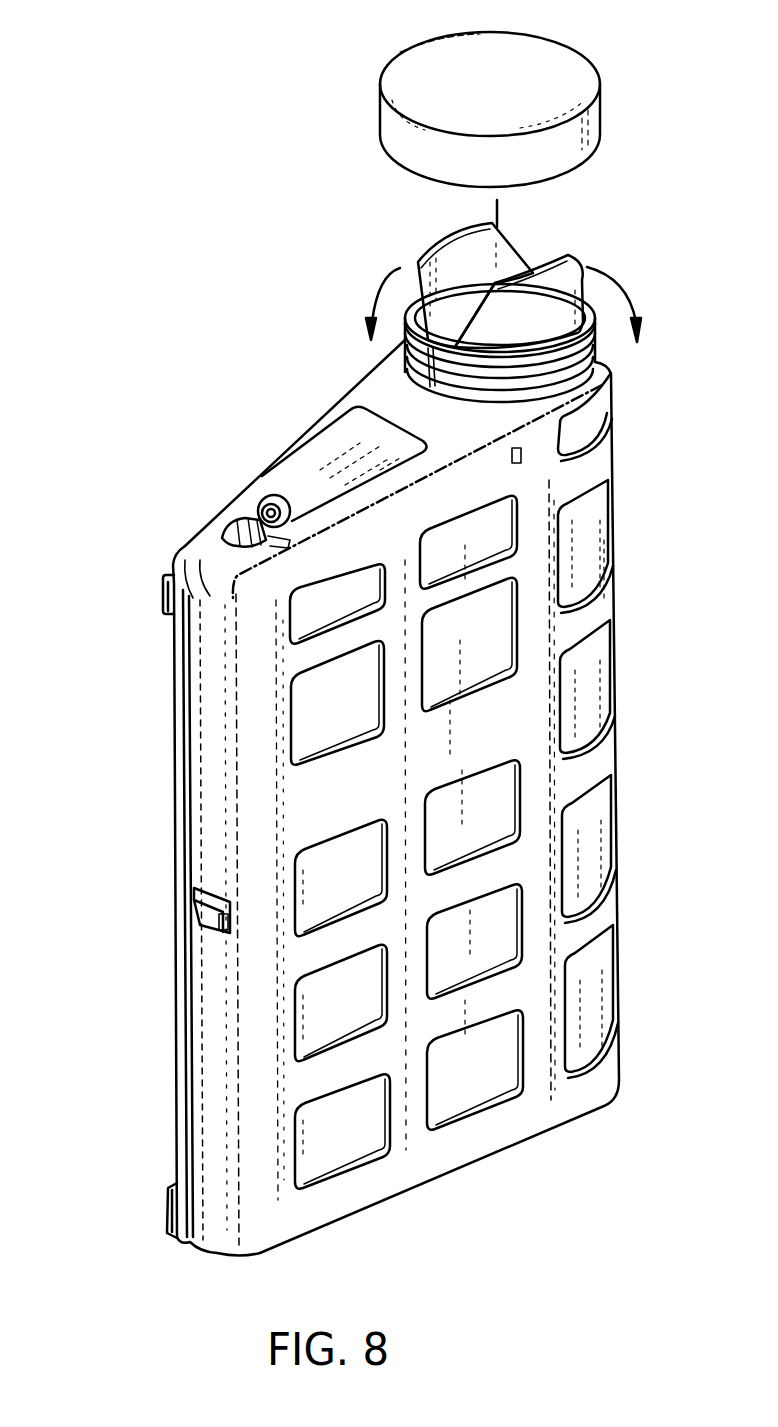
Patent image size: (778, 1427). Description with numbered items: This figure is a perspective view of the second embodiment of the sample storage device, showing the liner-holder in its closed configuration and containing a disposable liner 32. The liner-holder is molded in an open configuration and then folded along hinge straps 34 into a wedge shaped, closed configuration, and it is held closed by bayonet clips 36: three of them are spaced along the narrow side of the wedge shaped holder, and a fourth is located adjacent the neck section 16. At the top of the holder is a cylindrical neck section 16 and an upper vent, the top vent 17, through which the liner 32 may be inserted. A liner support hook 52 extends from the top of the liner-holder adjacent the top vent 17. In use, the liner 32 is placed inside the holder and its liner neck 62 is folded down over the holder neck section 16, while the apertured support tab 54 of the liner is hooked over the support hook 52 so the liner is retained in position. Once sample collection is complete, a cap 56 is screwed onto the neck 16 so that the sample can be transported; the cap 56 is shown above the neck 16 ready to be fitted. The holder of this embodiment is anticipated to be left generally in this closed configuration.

The neck section 16 is at (597, 300).
The top vent 17 is at (342, 442).
The disposable liner 32 is at (406, 842).
The hinge straps 34 is at (615, 594).
The bayonet clips 36 is at (164, 596).
The liner support hook 52 is at (232, 523).
The apertured support tab 54 is at (280, 494).
The cap 56 is at (593, 70).
The liner neck 62 is at (563, 258).